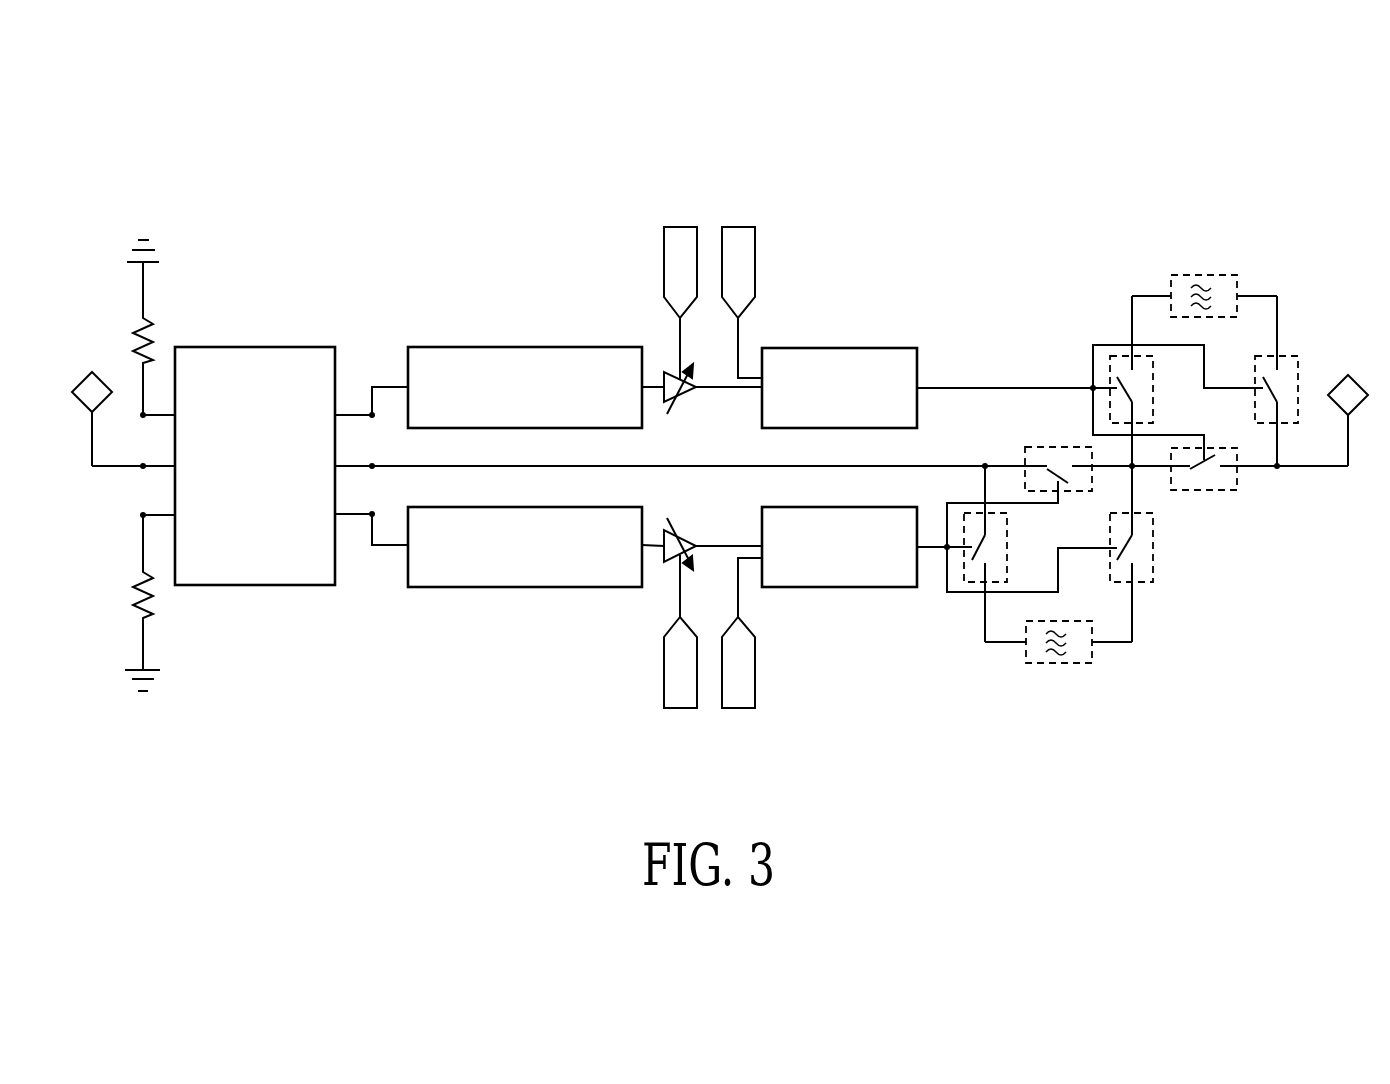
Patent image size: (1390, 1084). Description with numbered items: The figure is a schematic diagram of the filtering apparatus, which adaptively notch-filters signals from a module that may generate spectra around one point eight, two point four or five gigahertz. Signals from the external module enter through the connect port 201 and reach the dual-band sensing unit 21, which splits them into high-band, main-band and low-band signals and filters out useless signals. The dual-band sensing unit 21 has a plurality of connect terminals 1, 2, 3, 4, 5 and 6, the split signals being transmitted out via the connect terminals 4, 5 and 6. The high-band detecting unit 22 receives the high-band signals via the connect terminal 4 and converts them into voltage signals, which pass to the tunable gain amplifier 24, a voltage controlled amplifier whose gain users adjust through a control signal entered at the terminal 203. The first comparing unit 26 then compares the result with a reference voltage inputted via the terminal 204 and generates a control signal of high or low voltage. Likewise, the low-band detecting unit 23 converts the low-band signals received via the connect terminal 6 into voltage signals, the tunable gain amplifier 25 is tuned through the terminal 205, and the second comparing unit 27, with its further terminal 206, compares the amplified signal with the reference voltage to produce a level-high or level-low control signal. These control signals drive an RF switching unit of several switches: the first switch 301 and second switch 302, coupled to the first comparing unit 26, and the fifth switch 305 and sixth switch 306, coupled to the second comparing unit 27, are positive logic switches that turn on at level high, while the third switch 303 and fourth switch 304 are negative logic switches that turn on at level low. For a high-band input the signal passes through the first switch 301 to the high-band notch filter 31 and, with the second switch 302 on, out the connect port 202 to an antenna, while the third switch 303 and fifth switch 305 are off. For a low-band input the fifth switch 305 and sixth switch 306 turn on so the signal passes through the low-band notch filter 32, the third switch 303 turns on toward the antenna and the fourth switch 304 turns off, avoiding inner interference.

The connect terminal 1 is at (134, 416).
The connect terminal 2 is at (146, 451).
The connect terminal 3 is at (143, 501).
The connect terminal 4 is at (381, 417).
The connect terminal 5 is at (371, 450).
The connect terminal 6 is at (371, 499).
The dual-band sensing unit 21 is at (257, 347).
The high-band detecting unit 22 is at (510, 347).
The low-band detecting unit 23 is at (487, 587).
The tunable gain amplifier 24 is at (693, 398).
The tunable gain amplifier 25 is at (690, 535).
The first comparing unit 26 is at (838, 348).
The second comparing unit 27 is at (838, 587).
The high-band notch filter 31 is at (1207, 275).
The low-band notch filter 32 is at (1065, 663).
The connect port 201 is at (90, 372).
The connect port 202 is at (1358, 383).
The terminal 203 is at (680, 227).
The terminal 204 is at (738, 227).
The terminal 205 is at (680, 708).
The terminal 206 is at (738, 708).
The first switch 301 is at (1117, 356).
The second switch 302 is at (1290, 355).
The third switch 303 is at (1237, 488).
The fourth switch 304 is at (1053, 447).
The fifth switch 305 is at (1153, 553).
The sixth switch 306 is at (970, 582).